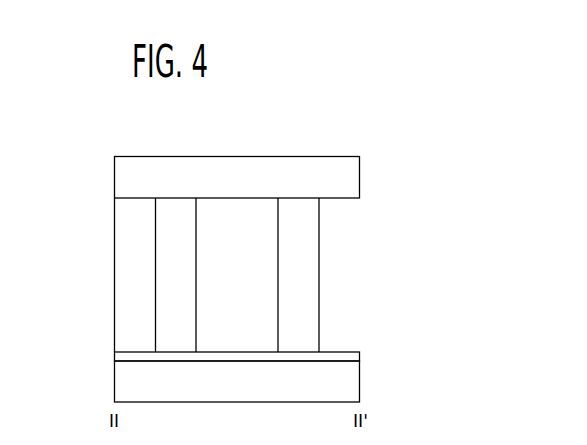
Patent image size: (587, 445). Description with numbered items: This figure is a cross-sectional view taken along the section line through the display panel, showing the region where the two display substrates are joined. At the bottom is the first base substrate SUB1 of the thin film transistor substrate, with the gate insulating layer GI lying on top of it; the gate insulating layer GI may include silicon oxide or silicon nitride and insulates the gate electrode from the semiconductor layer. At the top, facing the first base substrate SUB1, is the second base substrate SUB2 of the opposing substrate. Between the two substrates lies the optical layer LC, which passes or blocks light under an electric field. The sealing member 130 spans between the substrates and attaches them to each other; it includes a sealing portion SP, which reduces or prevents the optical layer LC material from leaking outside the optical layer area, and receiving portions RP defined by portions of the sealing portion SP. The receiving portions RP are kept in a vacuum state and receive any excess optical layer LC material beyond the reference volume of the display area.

The second base substrate SUB2 is at (357, 179).
The first base substrate SUB1 is at (357, 385).
The gate insulating layer GI is at (357, 355).
The optical layer LC is at (120, 285).
The receiving portion RP is at (268, 254).
The sealing portion SP is at (310, 285).
The sealing member 130 is at (306, 275).